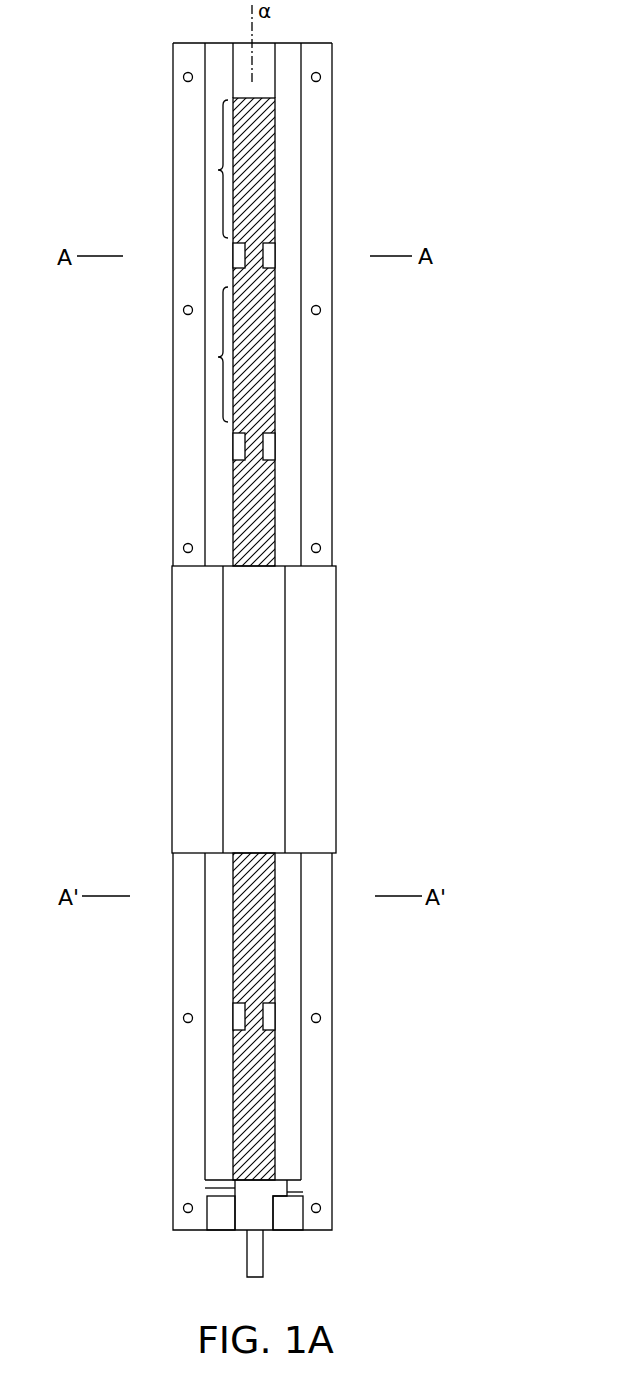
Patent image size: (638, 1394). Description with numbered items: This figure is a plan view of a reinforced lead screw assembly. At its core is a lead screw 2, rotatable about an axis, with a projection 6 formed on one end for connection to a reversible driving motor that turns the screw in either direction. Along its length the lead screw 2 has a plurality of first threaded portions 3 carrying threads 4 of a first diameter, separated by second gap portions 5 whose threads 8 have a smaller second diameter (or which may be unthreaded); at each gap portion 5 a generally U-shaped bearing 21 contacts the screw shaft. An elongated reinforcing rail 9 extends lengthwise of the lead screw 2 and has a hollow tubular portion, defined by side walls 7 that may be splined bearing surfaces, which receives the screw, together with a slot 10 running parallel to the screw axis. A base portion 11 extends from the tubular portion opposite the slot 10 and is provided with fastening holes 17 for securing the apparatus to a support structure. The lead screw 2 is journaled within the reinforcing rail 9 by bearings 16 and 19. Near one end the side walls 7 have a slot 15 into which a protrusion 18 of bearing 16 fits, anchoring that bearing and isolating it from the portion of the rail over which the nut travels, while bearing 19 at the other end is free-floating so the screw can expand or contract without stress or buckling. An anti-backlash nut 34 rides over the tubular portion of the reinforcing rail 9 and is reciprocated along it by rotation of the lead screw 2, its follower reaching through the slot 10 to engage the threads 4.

The lead screw 2 is at (272, 136).
The first threaded portions 3 is at (220, 357).
The threads 4 is at (273, 415).
The second gap portions 5 is at (276, 256).
The projection 6 is at (247, 1265).
The side walls 7 is at (222, 981).
The threads 8 is at (255, 448).
The reinforcing rail 9 is at (283, 186).
The slot 10 is at (272, 918).
The base portion 11 is at (318, 1081).
The slot 15 is at (205, 1188).
The bearing 16 is at (258, 1210).
The fastening holes 17 is at (322, 1018).
The protrusion 18 is at (303, 1191).
The bearing 19 is at (243, 50).
The U-shaped bearing 21 is at (233, 258).
The anti-backlash nut 34 is at (208, 619).